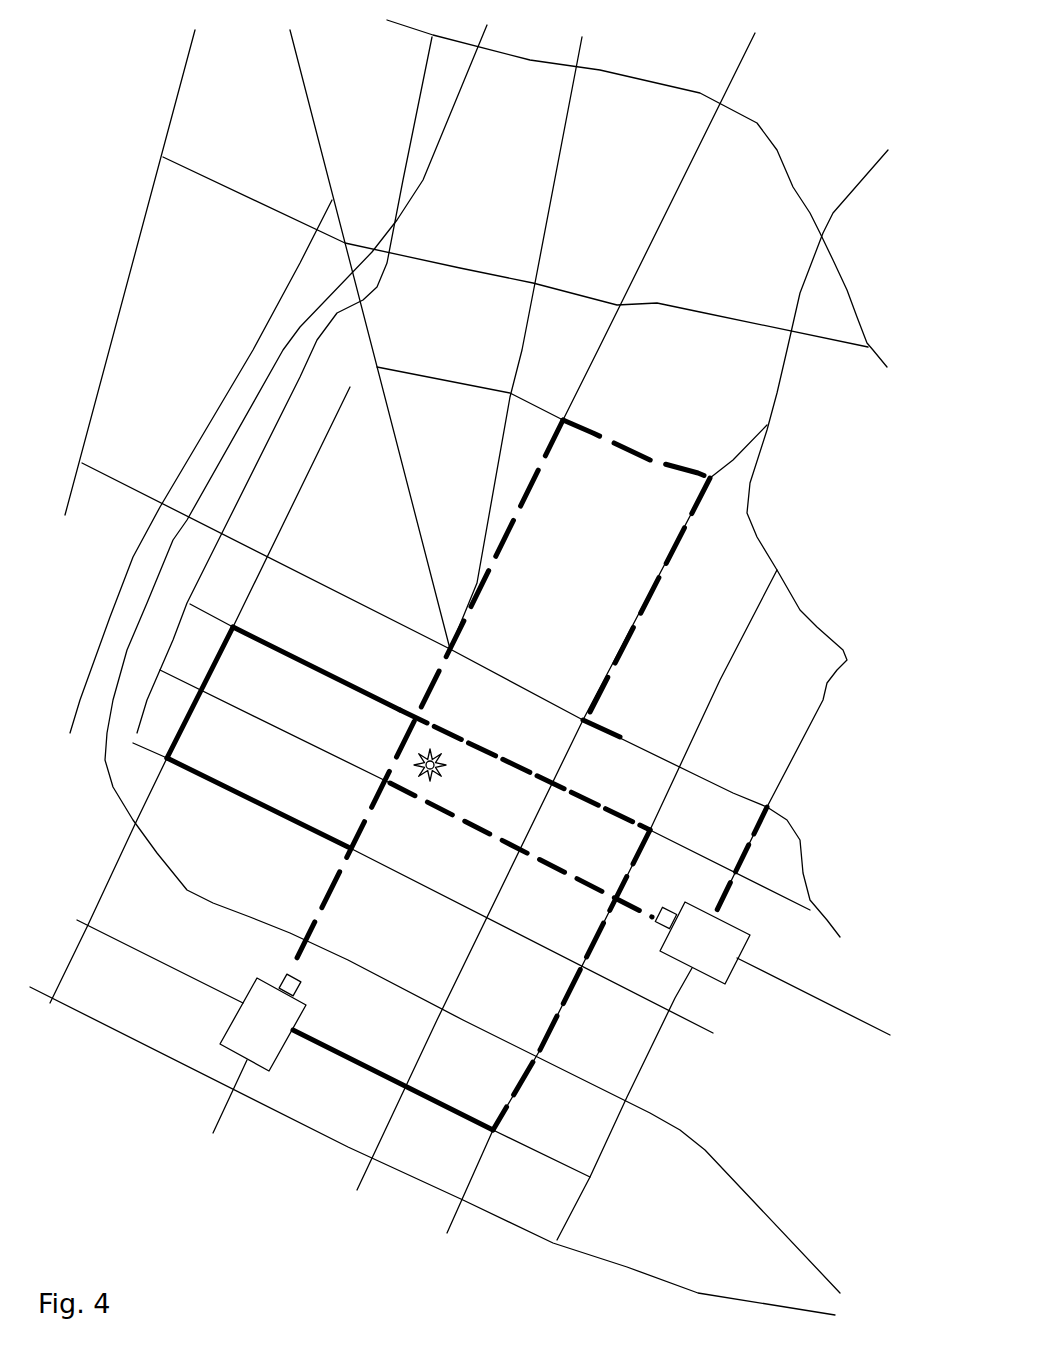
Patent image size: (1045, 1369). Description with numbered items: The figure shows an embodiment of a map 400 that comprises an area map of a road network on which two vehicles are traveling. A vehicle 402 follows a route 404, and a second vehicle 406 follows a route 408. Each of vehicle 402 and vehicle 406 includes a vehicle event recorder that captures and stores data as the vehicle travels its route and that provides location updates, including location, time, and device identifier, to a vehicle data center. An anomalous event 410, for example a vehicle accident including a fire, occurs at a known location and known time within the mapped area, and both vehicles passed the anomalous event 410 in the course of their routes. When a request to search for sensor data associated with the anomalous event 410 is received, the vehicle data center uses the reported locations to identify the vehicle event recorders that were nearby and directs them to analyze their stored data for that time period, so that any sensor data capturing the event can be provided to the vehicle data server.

The map 400 is at (862, 240).
The vehicle 402 is at (303, 1018).
The route 404 is at (267, 817).
The vehicle 406 is at (727, 978).
The route 408 is at (667, 750).
The anomalous event 410 is at (447, 780).